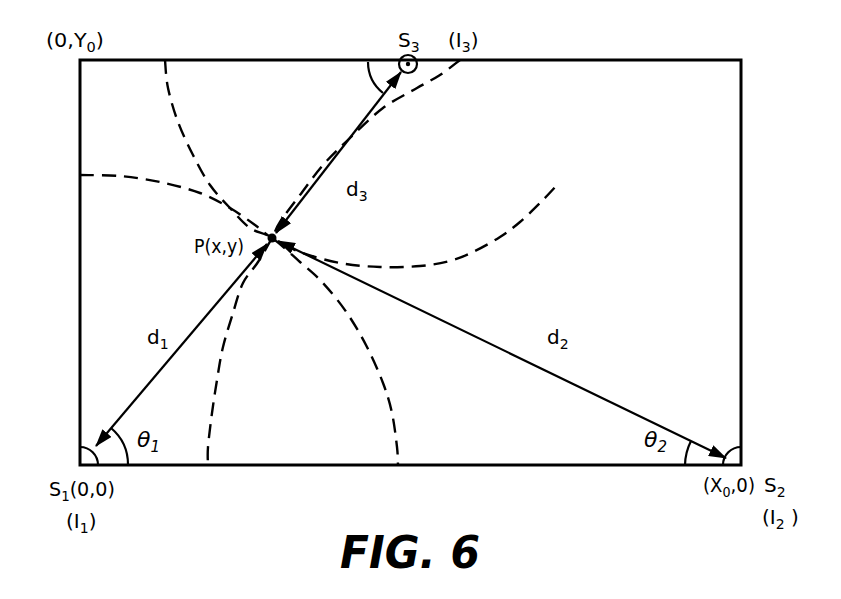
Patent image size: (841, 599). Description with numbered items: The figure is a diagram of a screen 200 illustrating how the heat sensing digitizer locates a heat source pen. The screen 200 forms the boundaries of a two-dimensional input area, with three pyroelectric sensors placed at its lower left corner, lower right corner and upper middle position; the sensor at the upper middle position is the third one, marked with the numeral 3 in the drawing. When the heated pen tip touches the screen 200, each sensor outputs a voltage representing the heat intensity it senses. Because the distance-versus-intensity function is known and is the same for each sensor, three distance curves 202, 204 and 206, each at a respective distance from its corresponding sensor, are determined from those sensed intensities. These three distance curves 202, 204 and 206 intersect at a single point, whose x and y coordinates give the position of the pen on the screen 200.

The screen 200 is at (683, 99).
The distance curve 202 is at (392, 420).
The distance curve 204 is at (219, 386).
The distance curve 206 is at (546, 200).
The angle at station S3 3 is at (368, 84).